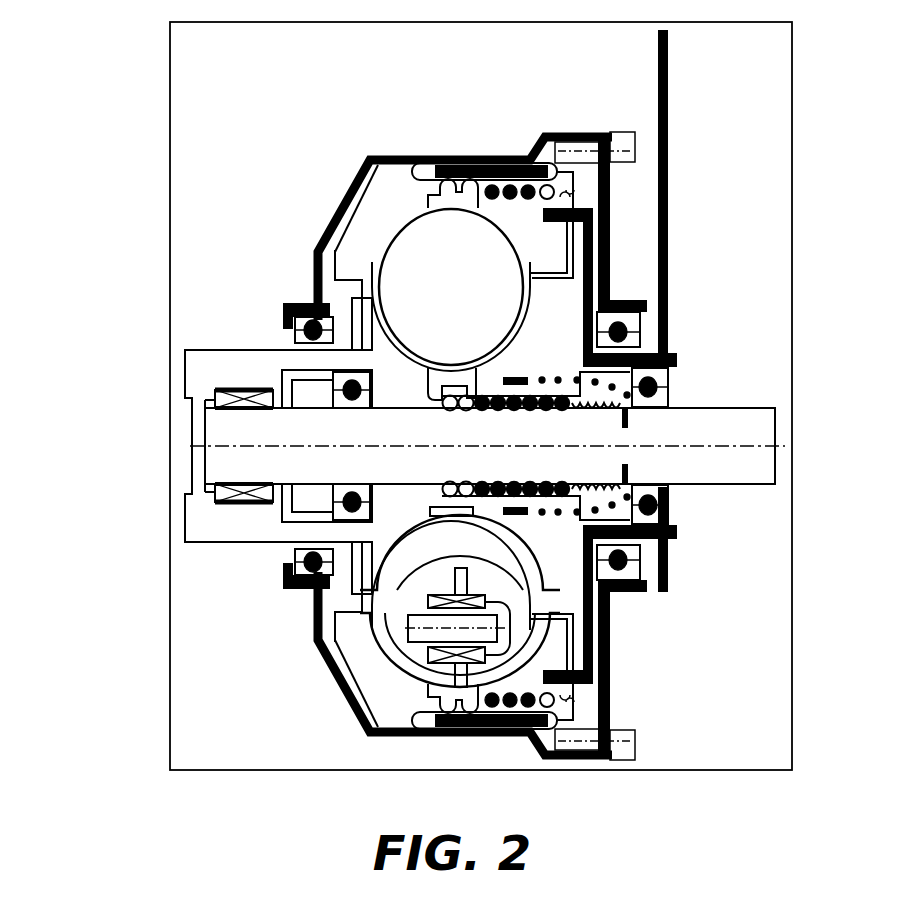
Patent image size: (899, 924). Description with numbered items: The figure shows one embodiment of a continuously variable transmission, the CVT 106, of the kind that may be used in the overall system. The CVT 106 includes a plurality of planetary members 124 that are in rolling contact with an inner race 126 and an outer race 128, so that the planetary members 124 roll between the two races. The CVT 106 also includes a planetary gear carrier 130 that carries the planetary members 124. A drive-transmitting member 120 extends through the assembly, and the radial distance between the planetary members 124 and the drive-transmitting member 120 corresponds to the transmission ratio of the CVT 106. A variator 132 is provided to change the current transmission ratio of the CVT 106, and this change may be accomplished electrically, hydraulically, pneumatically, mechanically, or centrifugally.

The continuously variable transmission 106 is at (126, 105).
The drive-transmitting member 120 is at (753, 407).
The planetary members 124 is at (451, 304).
The inner race 126 is at (371, 322).
The outer race 128 is at (386, 202).
The planetary gear carrier 130 is at (291, 529).
The variator 132 is at (657, 89).